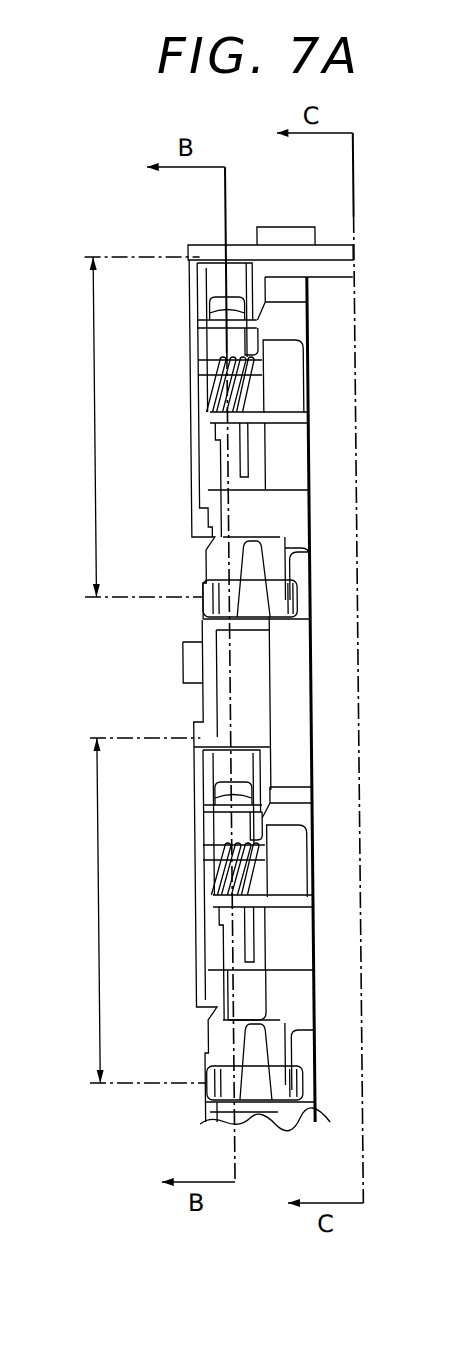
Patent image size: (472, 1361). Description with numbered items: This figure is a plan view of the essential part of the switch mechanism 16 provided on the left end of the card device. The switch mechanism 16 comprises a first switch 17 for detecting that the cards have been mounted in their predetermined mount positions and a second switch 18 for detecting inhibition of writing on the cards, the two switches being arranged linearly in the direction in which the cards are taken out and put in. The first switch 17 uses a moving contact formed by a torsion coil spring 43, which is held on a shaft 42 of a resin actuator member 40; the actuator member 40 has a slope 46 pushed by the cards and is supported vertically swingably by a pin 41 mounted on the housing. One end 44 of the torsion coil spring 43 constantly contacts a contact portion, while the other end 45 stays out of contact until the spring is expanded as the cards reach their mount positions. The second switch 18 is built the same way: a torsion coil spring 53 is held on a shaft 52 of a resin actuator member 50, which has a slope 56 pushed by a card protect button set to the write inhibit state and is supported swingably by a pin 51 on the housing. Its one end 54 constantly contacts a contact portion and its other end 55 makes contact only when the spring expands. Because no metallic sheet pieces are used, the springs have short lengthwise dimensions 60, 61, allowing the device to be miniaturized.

The switch mechanism 16 is at (87, 690).
The first switch 17 is at (186, 479).
The second switch 18 is at (186, 1009).
The actuator member 40 is at (256, 478).
The pin 41 is at (203, 603).
The shaft 42 is at (210, 385).
The torsion coil spring 43 is at (225, 370).
The one end of the torsion coil spring 44 is at (246, 463).
The other end of the torsion coil spring 45 is at (213, 328).
The slope 46 is at (284, 445).
The actuator member 50 is at (248, 998).
The pin 51 is at (208, 1088).
The shaft 52 is at (210, 897).
The torsion coil spring 53 is at (228, 855).
The one end of the torsion coil spring 54 is at (246, 953).
The other end of the torsion coil spring 55 is at (260, 807).
The slope 56 is at (294, 937).
The lengthwise dimension 60 is at (96, 415).
The lengthwise dimension 61 is at (96, 930).